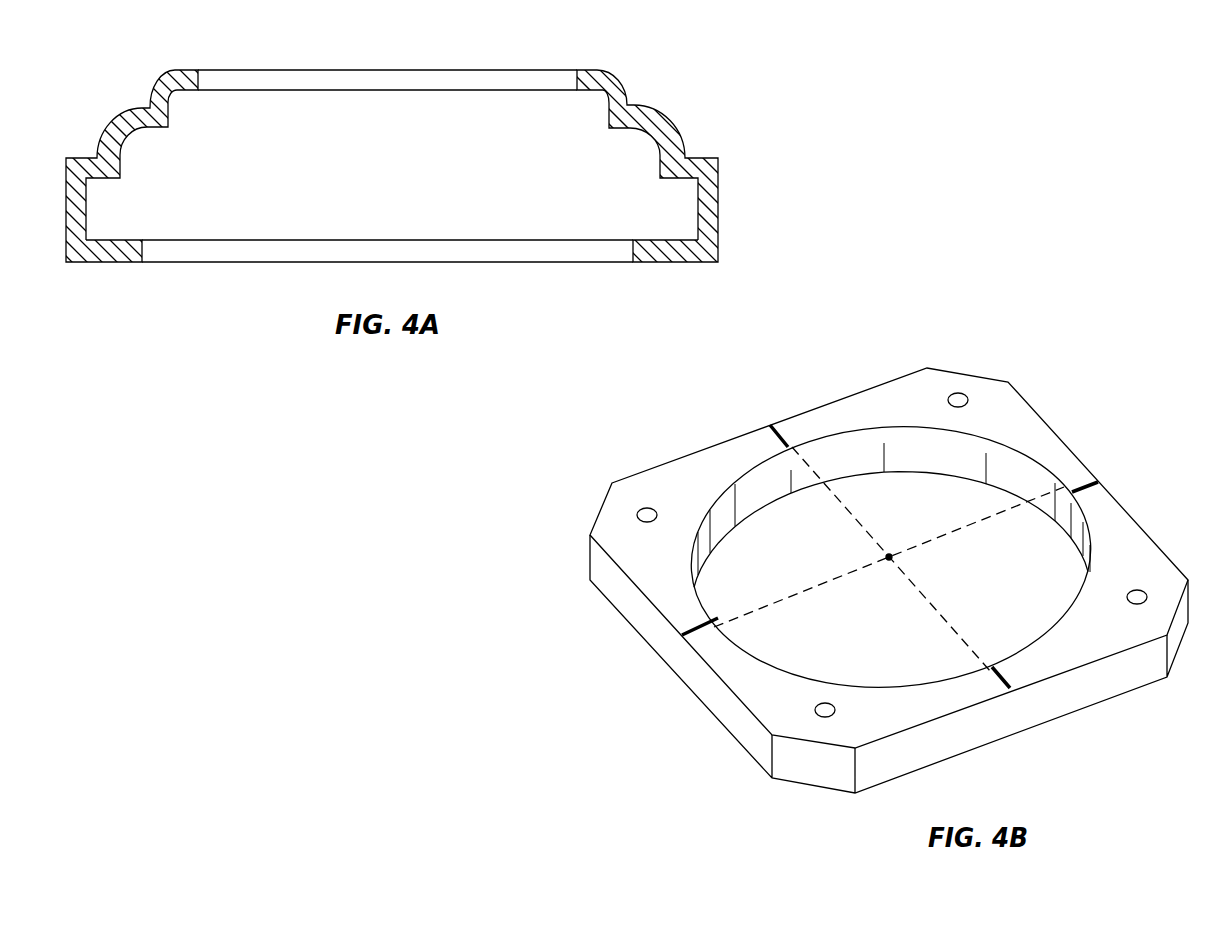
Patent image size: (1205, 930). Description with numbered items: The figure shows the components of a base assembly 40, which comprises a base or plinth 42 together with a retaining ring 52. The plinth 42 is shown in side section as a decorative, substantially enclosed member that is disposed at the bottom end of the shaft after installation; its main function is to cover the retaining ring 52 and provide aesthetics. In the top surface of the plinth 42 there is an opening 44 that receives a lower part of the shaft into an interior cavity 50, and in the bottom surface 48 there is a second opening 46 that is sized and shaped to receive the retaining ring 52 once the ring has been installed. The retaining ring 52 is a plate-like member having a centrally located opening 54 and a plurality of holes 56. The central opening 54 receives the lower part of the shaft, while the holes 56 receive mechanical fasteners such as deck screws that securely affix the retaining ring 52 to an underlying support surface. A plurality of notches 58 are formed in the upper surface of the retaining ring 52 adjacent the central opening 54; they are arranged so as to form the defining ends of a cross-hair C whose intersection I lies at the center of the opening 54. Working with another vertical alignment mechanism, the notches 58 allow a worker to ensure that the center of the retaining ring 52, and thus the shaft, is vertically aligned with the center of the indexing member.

In FIG. 4A, the base assembly 40 is at (1030, 192).
In FIG. 4A, the plinth 42 is at (662, 118).
In FIG. 4A, the opening 44 is at (515, 82).
In FIG. 4A, the opening 46 is at (505, 260).
In FIG. 4A, the bottom surface 48 is at (110, 263).
In FIG. 4A, the interior cavity 50 is at (398, 181).
In FIG. 4B, the retaining ring 52 is at (1028, 428).
In FIG. 4B, the central opening 54 is at (878, 503).
In FIG. 4B, the holes 56 is at (637, 513).
In FIG. 4B, the notches 58 is at (1080, 487).
In FIG. 4B, the cross-hair C is at (832, 540).
In FIG. 4B, the intersection I is at (889, 555).